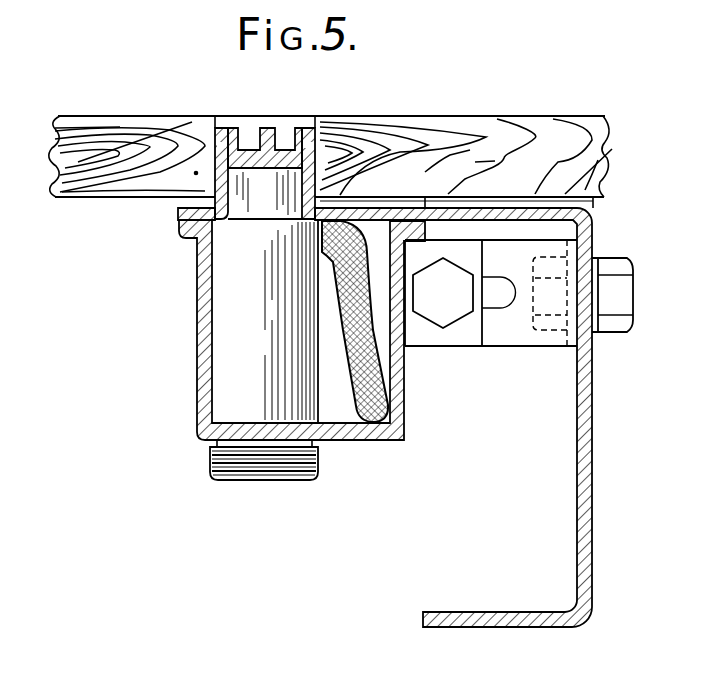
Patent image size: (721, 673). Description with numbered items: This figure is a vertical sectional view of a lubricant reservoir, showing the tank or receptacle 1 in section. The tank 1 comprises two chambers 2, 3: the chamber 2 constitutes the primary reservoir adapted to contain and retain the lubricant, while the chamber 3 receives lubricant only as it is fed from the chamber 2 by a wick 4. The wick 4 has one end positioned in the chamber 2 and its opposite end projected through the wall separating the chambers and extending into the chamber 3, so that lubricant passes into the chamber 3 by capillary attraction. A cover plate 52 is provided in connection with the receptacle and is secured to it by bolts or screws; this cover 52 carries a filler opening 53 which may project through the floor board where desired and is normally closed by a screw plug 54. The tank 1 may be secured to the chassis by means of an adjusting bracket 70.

The tank 1 is at (308, 395).
The chamber 2 is at (338, 408).
The chamber 3 is at (237, 327).
The wick 4 is at (371, 400).
The cover plate 52 is at (385, 210).
The filler opening 53 is at (270, 190).
The screw plug 54 is at (253, 153).
The adjusting bracket 70 is at (498, 337).